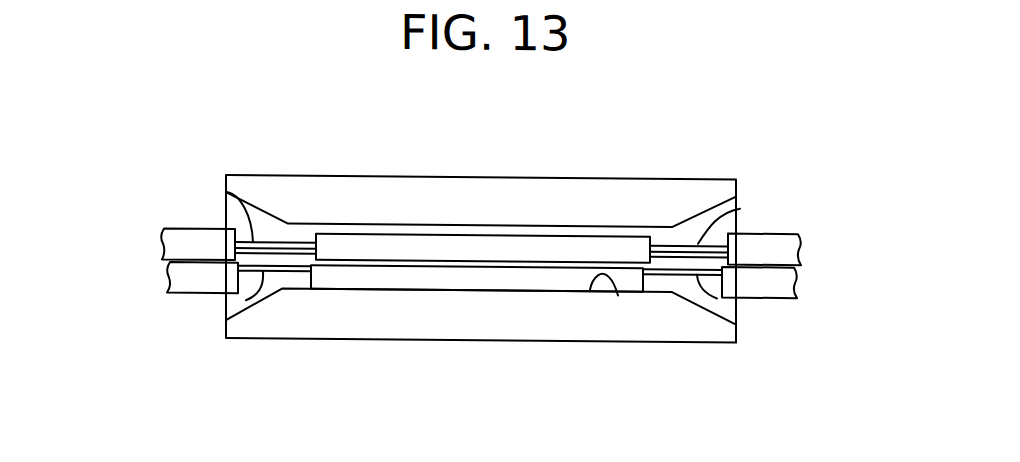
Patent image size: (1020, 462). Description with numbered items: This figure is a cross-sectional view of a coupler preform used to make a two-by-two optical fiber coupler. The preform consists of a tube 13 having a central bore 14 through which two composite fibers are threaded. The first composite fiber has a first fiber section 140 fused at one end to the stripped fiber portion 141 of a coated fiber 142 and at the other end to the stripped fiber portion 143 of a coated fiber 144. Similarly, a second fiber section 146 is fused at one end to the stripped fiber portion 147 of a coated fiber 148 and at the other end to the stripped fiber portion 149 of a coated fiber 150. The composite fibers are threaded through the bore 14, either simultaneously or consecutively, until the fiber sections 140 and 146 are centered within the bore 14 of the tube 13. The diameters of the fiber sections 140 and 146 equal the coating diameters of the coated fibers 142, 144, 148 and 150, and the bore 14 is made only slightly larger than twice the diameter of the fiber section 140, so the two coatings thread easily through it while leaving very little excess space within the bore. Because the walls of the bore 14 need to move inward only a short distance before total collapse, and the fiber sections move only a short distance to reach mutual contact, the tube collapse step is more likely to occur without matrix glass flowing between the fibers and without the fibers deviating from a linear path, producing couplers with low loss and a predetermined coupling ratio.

The tube 13 is at (695, 326).
The bore 14 is at (618, 290).
The first fiber section 140 is at (367, 244).
The fiber section 146 is at (551, 273).
The stripped fiber portion 141 is at (227, 190).
The stripped fiber portion 143 is at (740, 202).
The stripped fiber portion 147 is at (246, 298).
The stripped fiber portion 149 is at (717, 292).
The coated fiber 142 is at (172, 242).
The coated fiber 144 is at (787, 248).
The coated fiber 148 is at (170, 304).
The coated fiber 150 is at (788, 304).